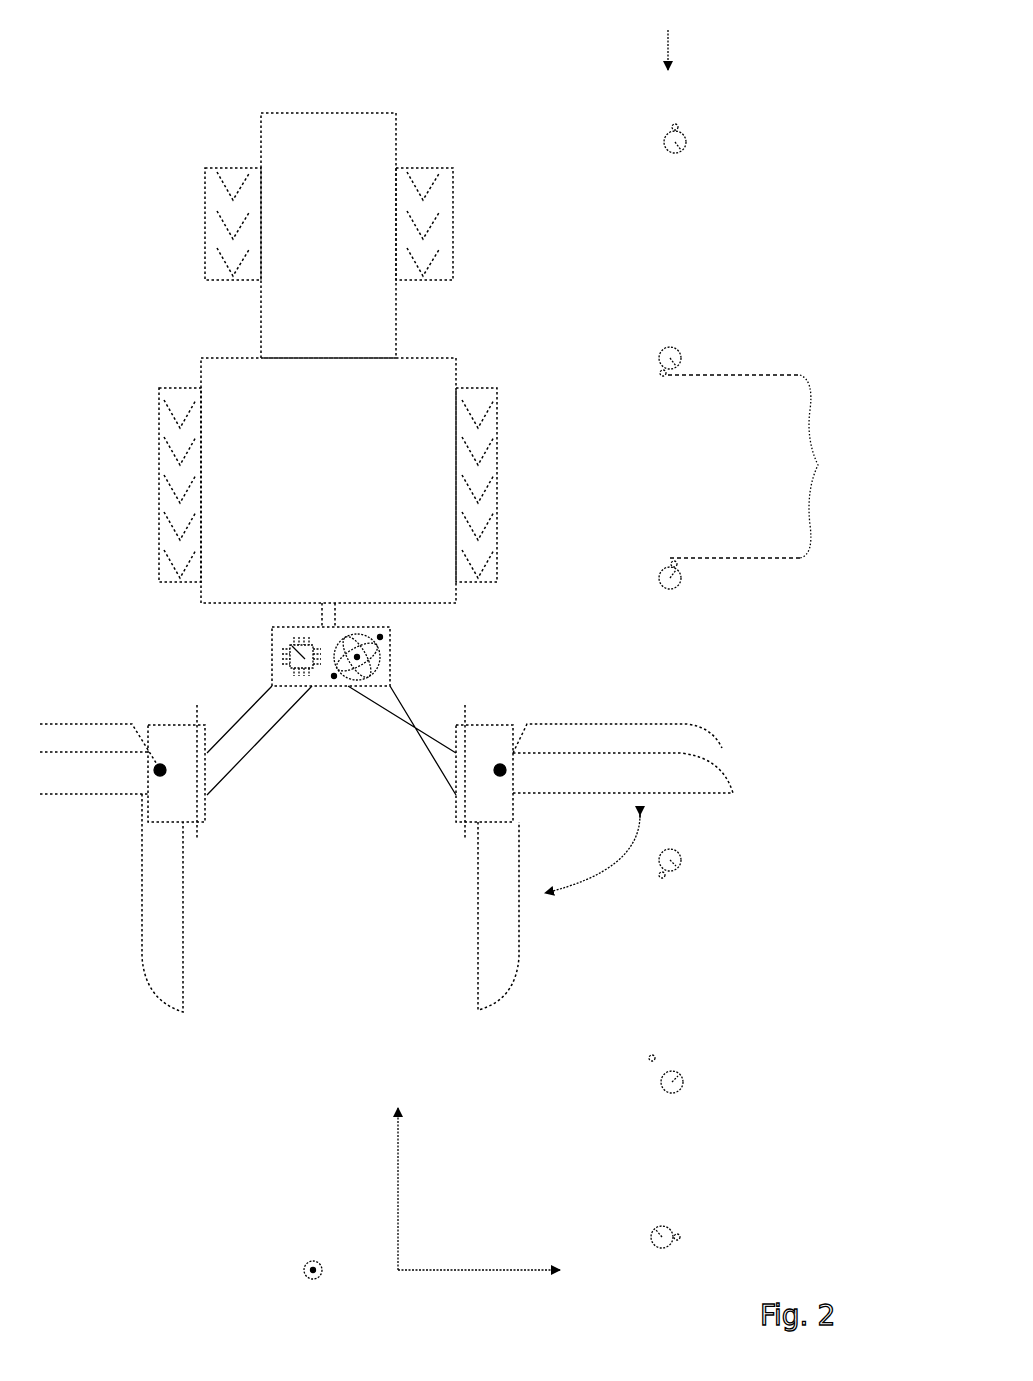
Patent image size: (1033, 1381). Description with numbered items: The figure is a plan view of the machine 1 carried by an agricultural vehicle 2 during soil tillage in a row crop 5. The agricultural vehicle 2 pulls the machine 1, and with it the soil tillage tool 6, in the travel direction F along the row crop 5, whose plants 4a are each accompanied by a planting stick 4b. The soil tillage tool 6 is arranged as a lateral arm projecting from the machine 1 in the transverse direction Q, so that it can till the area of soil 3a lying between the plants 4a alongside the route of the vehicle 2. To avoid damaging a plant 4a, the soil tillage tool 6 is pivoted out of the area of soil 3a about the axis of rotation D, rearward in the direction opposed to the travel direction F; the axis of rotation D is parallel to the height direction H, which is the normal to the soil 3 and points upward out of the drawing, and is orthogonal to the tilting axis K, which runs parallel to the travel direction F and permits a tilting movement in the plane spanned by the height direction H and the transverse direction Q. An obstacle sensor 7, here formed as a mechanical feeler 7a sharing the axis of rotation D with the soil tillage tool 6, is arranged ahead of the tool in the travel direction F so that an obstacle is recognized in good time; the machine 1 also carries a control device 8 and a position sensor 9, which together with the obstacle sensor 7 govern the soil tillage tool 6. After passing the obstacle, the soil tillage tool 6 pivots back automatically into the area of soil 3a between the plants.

The machine 1 is at (386, 818).
The agricultural vehicle 2 is at (527, 222).
The soil 3 is at (677, 252).
The area of soil 3a is at (760, 466).
The plant 4a is at (686, 148).
The planting stick 4b is at (678, 125).
The row crop 5 is at (668, 36).
The soil tillage tool 6 is at (678, 795).
The obstacle sensor 7 is at (623, 724).
The mechanical feeler 7a is at (603, 724).
The control device 8 is at (290, 646).
The position sensor 9 is at (380, 657).
The axis of rotation D is at (166, 770).
The tilting axis K is at (200, 830).
The travel direction F is at (400, 1183).
The transverse direction Q is at (470, 1270).
The height direction H is at (304, 1270).